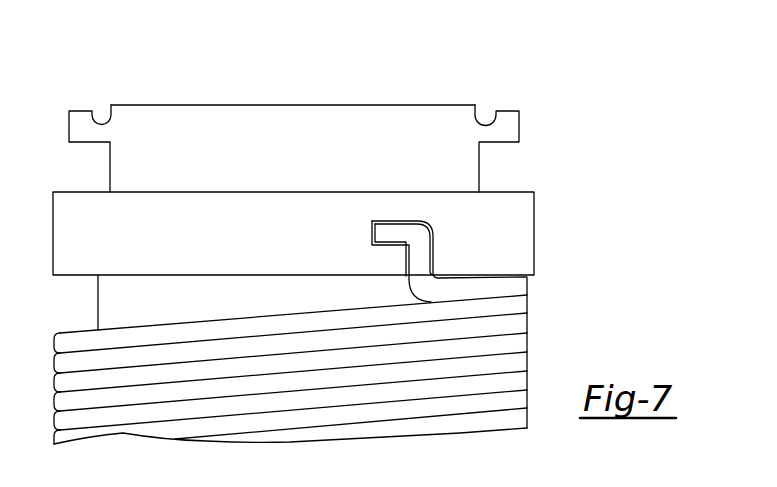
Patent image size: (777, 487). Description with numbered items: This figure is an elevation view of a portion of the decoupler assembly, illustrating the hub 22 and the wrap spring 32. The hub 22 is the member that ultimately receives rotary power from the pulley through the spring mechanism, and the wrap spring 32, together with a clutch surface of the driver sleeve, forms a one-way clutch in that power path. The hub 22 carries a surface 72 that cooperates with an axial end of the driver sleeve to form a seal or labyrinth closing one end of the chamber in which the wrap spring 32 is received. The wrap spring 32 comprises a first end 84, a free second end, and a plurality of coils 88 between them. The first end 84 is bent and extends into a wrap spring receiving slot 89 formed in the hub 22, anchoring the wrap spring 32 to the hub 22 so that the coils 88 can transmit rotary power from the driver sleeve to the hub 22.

The hub 22 is at (439, 106).
The surface 72 is at (537, 205).
The first end 84 is at (434, 255).
The wrap spring receiving slot 89 is at (393, 221).
The coils 88 is at (527, 342).
The wrap spring 32 is at (527, 378).